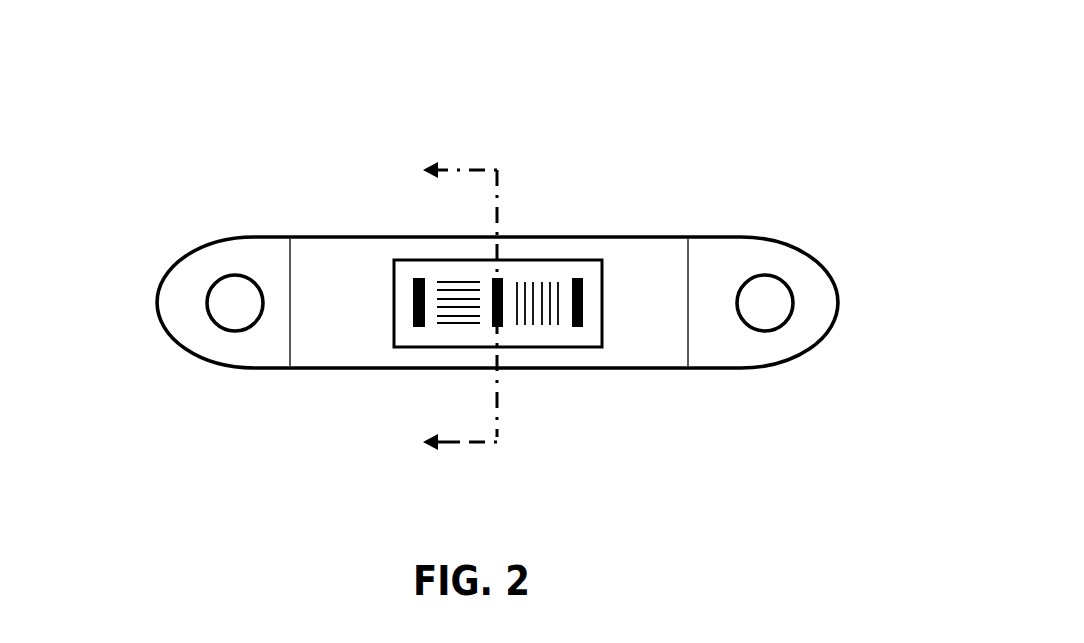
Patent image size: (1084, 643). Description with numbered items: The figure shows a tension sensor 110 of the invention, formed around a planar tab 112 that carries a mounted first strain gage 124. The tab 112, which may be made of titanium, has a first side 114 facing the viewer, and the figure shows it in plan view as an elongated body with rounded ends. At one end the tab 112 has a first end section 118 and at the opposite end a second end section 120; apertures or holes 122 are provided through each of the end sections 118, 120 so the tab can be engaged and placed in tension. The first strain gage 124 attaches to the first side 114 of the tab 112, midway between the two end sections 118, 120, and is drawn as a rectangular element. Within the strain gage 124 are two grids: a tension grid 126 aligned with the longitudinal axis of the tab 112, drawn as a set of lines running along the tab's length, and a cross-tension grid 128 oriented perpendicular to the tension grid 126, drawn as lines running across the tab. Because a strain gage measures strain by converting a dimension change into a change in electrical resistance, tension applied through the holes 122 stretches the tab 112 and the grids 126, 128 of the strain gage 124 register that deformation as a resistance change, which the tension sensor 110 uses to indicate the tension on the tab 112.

The tension sensor 110 is at (202, 64).
The planar tab 112 is at (662, 370).
The first side 114 is at (665, 247).
The first end section 118 is at (158, 304).
The second end section 120 is at (838, 302).
The apertures or holes 122 is at (230, 310).
The first strain gage 124 is at (581, 270).
The tension grid 126 is at (459, 323).
The cross-tension grid 128 is at (531, 323).